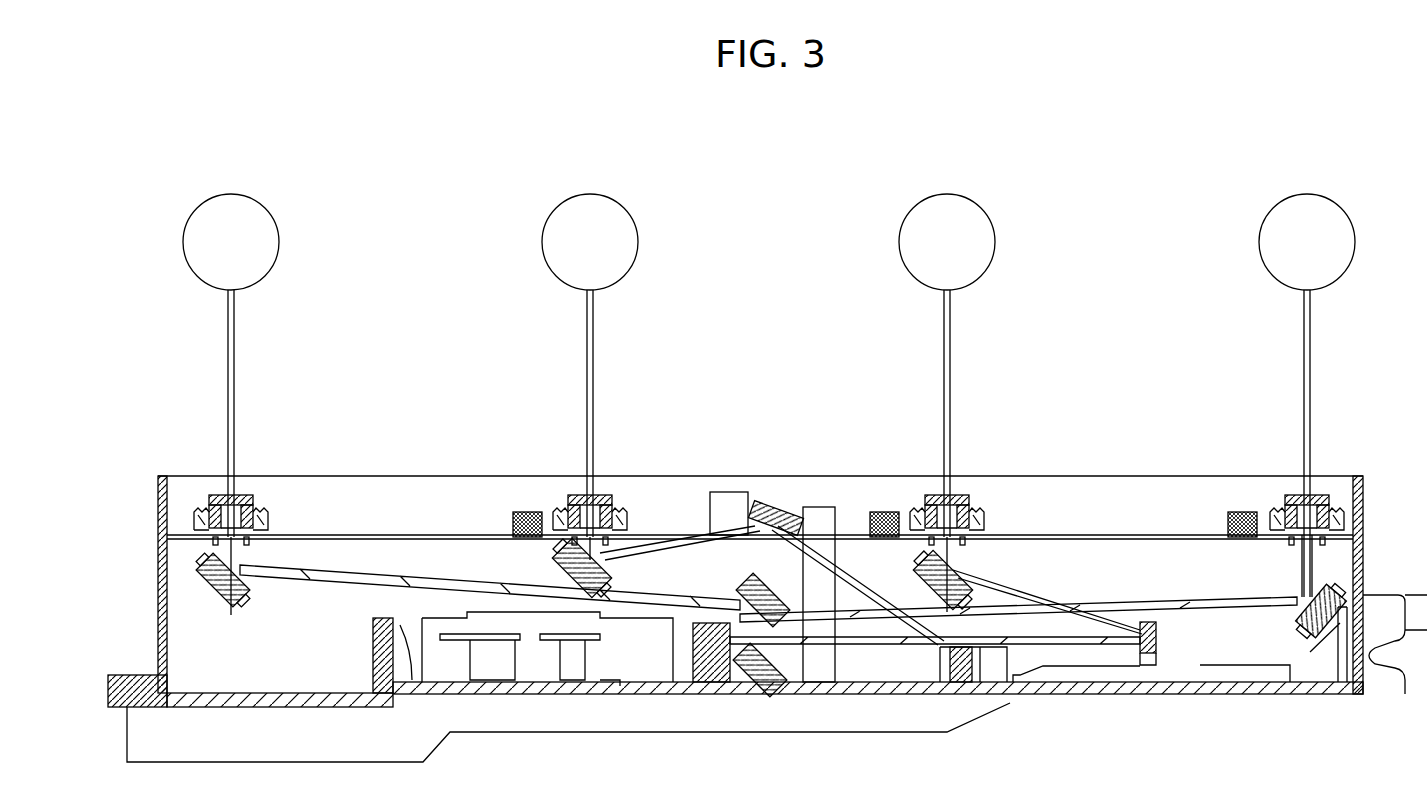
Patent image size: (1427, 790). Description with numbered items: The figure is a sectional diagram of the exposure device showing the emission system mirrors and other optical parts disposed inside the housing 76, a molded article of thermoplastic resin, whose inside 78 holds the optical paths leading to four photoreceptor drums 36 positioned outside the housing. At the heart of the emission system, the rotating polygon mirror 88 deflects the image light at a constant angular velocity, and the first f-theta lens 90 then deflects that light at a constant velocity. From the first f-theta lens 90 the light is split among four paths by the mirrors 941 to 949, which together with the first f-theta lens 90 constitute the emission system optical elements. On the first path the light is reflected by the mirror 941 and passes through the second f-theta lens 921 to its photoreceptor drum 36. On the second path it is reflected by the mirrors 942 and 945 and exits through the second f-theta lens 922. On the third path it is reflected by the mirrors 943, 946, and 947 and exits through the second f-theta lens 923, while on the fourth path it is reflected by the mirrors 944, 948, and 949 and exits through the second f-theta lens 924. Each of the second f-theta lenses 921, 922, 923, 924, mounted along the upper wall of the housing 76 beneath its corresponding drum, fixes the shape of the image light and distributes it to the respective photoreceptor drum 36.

The photoreceptor drum 36 is at (240, 218).
The housing 76 is at (158, 553).
The inside 78 is at (195, 655).
The rotating polygon mirror 88 is at (412, 622).
The first f-theta lens 90 is at (718, 685).
The second f-theta lens 921 is at (1325, 495).
The second f-theta lens 922 is at (968, 497).
The second f-theta lens 923 is at (610, 497).
The second f-theta lens 924 is at (248, 497).
The mirror 941 is at (1305, 627).
The mirror 942 is at (1148, 665).
The mirror 943 is at (962, 700).
The mirror 944 is at (762, 695).
The mirror 945 is at (965, 563).
The mirror 946 is at (780, 505).
The mirror 947 is at (615, 568).
The mirror 948 is at (800, 586).
The mirror 949 is at (245, 600).